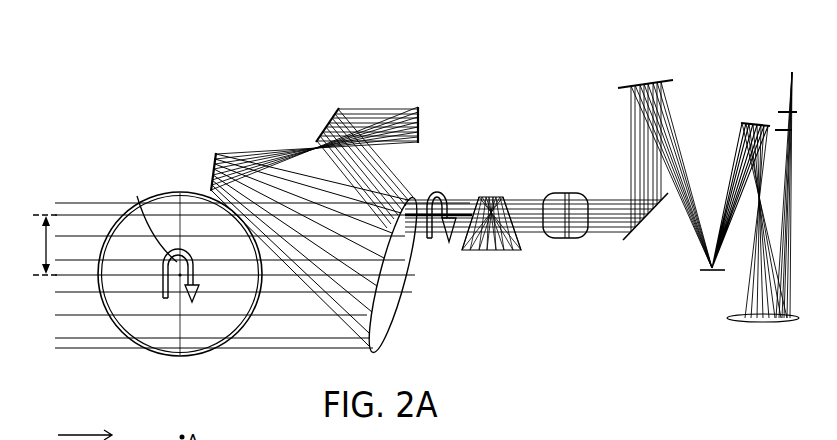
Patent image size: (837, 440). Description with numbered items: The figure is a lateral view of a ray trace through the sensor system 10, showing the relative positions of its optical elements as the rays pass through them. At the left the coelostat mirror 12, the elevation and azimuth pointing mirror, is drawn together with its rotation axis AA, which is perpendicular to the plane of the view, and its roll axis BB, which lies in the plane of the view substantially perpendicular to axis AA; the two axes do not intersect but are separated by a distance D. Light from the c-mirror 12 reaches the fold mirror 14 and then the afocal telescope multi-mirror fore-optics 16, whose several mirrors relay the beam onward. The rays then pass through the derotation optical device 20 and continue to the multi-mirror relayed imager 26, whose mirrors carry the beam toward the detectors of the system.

The sensor system 10 is at (452, 50).
The coelostat mirror 12 is at (213, 350).
The fold mirror 14 is at (243, 330).
The afocal telescope multi-mirror arrangement fore-optics 16 is at (203, 100).
The derotation optical device 20 is at (495, 252).
The multi-mirror relayed imager 26 is at (830, 68).